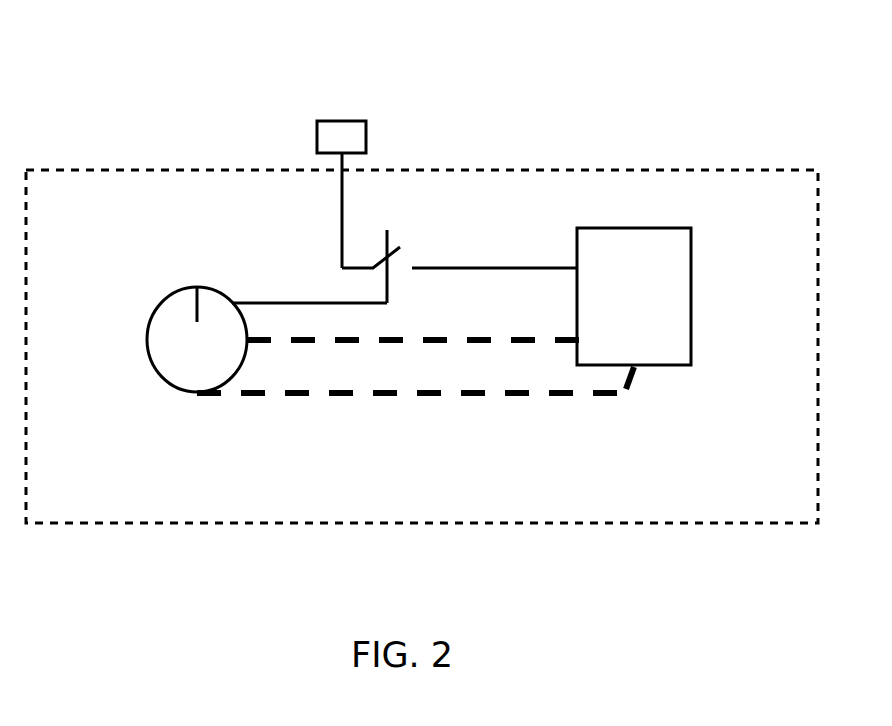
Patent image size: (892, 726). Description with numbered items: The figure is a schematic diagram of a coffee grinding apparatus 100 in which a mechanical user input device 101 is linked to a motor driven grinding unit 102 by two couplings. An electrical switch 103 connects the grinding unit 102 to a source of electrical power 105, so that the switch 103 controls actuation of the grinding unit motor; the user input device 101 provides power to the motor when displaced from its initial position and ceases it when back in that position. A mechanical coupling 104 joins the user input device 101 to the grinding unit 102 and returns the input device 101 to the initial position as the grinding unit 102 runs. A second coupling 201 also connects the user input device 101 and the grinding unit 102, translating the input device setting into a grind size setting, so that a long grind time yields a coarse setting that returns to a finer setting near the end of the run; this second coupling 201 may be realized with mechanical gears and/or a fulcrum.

The apparatus for grinding coffee 100 is at (237, 170).
The mechanical user input device 101 is at (152, 310).
The grinding unit 102 is at (691, 300).
The electrical switch 103 is at (380, 263).
The mechanical coupling 104 is at (433, 343).
The source of electrical power 105 is at (366, 122).
The second coupling 201 is at (300, 394).